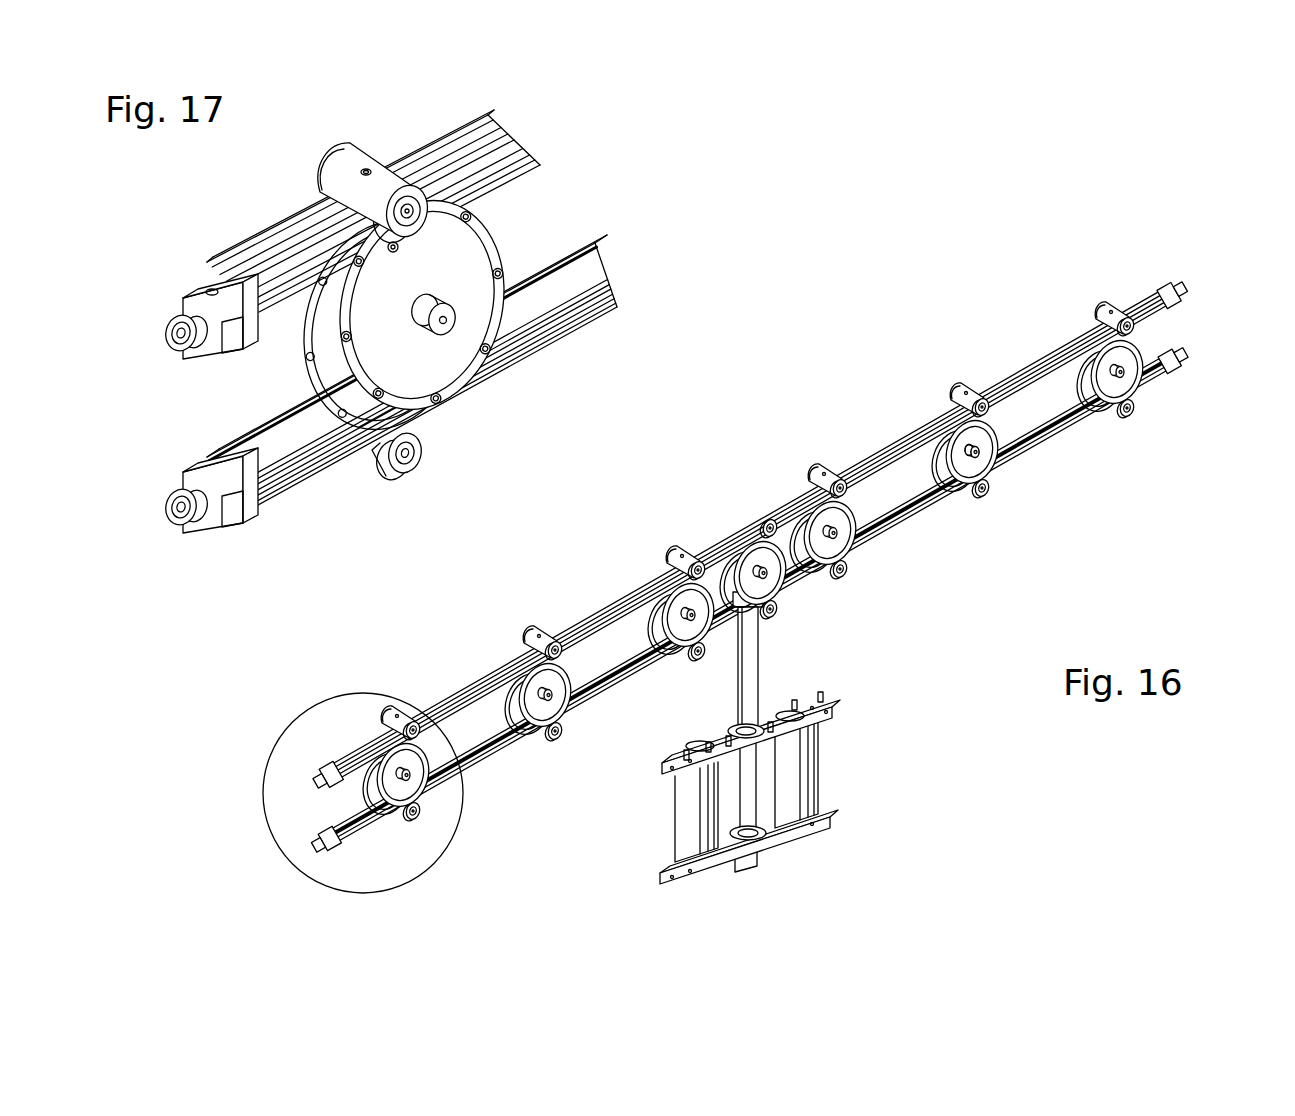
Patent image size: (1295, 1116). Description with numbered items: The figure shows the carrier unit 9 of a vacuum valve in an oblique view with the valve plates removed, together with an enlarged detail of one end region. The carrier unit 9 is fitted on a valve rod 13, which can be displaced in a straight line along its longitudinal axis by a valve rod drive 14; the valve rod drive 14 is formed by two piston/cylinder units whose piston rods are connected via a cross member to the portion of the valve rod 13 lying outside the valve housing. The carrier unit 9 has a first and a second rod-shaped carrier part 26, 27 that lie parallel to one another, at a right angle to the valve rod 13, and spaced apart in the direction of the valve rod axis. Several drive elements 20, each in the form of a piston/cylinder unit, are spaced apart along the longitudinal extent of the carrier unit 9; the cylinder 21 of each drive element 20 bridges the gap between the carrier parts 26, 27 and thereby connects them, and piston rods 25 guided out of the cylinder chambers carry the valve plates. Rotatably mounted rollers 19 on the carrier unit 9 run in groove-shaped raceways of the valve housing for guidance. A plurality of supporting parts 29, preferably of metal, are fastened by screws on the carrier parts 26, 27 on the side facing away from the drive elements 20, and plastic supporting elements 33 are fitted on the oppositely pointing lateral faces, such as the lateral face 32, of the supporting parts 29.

In FIG. 17, the carrier unit 9 is at (552, 92).
In FIG. 16, the carrier unit 9 is at (1202, 330).
In FIG. 16, the valve rod 13 is at (757, 665).
In FIG. 16, the valve rod drive 14 is at (822, 770).
In FIG. 17, the rollers 19 is at (183, 475).
In FIG. 17, the drive elements 20 is at (512, 262).
In FIG. 16, the drive elements 20 is at (378, 795).
In FIG. 17, the cylinder 21 is at (483, 222).
In FIG. 17, the piston rods 25 is at (440, 323).
In FIG. 16, the piston rods 25 is at (975, 455).
In FIG. 17, the first rod-shaped carrier part 26 is at (460, 150).
In FIG. 16, the first rod-shaped carrier part 26 is at (472, 687).
In FIG. 17, the second rod-shaped carrier part 27 is at (553, 320).
In FIG. 16, the second rod-shaped carrier part 27 is at (471, 773).
In FIG. 17, the supporting parts 29 is at (357, 158).
In FIG. 16, the supporting parts 29 is at (378, 722).
In FIG. 17, the lateral face 32 is at (380, 236).
In FIG. 17, the supporting elements 33 is at (408, 198).
In FIG. 16, the supporting elements 33 is at (1130, 325).